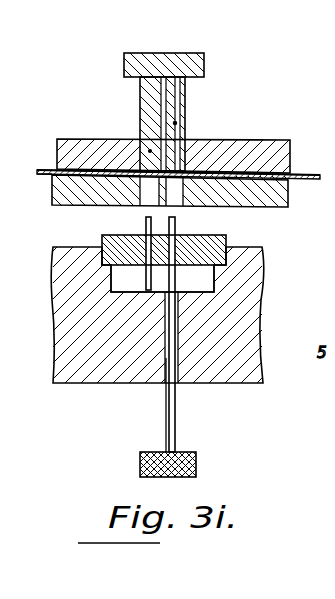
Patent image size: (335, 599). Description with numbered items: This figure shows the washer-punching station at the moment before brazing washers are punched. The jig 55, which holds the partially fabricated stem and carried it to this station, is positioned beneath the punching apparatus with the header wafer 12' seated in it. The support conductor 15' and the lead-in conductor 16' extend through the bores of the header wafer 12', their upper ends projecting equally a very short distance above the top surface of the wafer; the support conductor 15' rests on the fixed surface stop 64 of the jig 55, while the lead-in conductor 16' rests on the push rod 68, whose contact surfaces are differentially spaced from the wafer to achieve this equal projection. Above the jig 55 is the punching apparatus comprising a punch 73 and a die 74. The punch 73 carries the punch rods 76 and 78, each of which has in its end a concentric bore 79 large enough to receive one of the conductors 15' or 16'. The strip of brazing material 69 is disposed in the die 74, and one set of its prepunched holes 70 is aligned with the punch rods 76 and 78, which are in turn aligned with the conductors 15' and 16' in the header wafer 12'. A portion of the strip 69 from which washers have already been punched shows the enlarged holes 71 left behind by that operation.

The punch 73 is at (181, 53).
The punch rod 76 is at (140, 93).
The punch rod 78 is at (185, 96).
The concentric bore 79 is at (176, 122).
The die 74 is at (78, 139).
The strip of brazing material 69 is at (45, 169).
The enlarged holes 71 is at (299, 174).
The prepunched holes 70 is at (48, 175).
The support conductor 15' is at (126, 252).
The lead-in conductor 16' is at (192, 333).
The header wafer 12' is at (185, 244).
The jig 55 is at (53, 292).
The fixed surface stop 64 is at (139, 292).
The push rod 68 is at (166, 407).